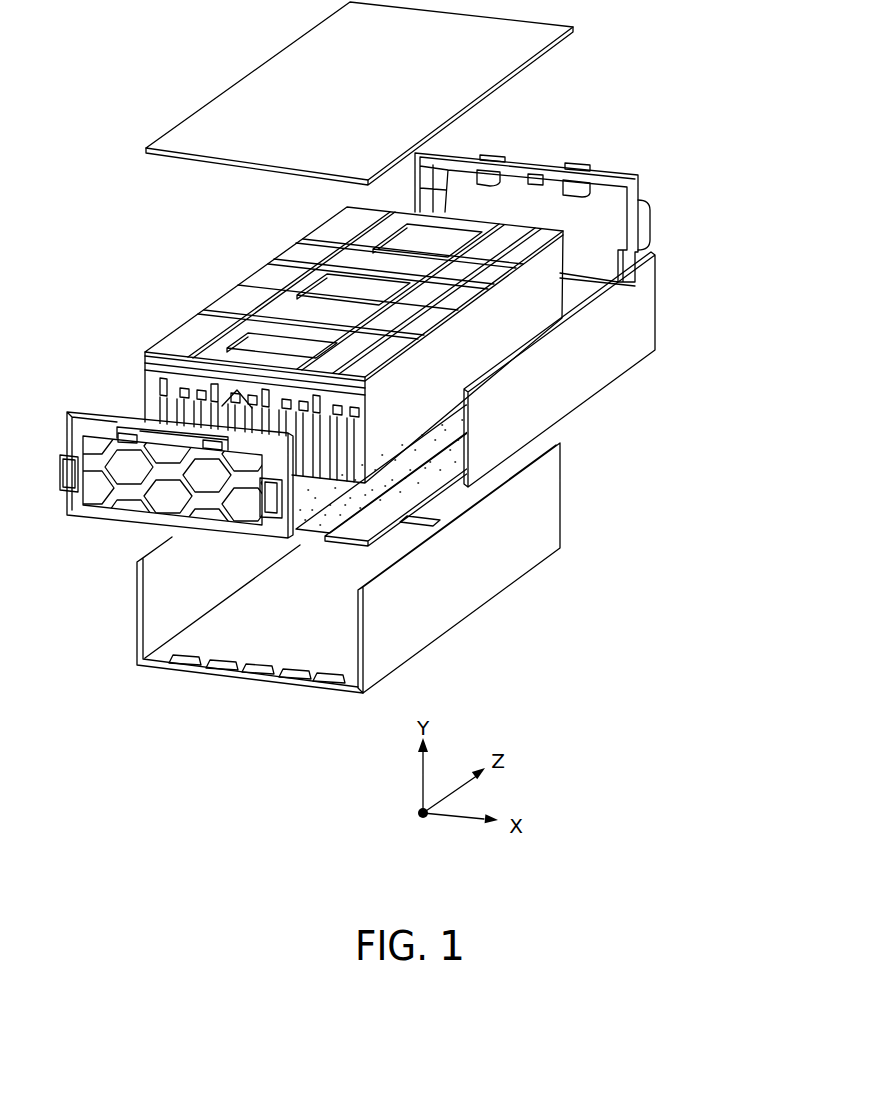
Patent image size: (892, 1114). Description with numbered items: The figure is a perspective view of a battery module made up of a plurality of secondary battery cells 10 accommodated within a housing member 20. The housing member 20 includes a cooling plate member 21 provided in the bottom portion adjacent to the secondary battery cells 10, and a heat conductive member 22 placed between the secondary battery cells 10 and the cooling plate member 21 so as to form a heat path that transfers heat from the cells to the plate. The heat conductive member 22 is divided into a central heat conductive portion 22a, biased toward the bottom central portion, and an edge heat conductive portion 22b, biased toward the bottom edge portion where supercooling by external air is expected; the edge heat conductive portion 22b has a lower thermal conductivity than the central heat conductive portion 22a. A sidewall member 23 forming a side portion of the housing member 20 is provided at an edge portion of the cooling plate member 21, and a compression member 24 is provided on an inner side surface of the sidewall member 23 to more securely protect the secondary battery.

The secondary battery cell 10 is at (241, 266).
The housing member 20 is at (758, 327).
The cooling plate member 21 is at (303, 643).
The heat conductive member 22 is at (708, 407).
The central heat conductive portion 22a is at (327, 492).
The edge heat conductive portion 22b is at (393, 500).
The sidewall member 23 is at (540, 515).
The compression member 24 is at (630, 322).